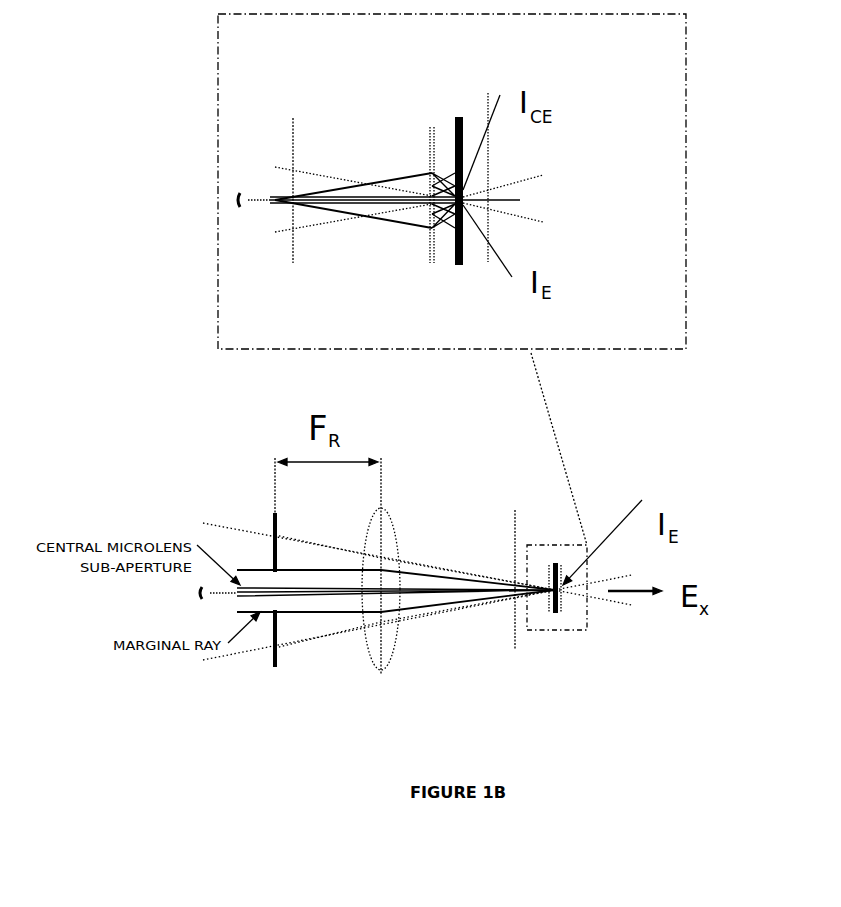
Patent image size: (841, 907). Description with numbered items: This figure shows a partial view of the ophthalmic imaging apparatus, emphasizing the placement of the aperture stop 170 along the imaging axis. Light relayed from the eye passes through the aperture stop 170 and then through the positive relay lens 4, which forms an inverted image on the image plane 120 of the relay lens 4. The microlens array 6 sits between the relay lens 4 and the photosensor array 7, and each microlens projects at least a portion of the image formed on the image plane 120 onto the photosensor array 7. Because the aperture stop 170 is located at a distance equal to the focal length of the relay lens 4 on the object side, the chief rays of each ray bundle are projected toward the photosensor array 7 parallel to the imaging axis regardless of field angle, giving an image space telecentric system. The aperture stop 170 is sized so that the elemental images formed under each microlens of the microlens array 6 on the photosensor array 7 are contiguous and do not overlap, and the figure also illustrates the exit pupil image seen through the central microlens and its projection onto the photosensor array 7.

The aperture stop 170 is at (266, 522).
The relay lens 4 is at (398, 523).
The image plane 120 is at (523, 526).
The microlens array 6 is at (545, 620).
The photosensor array 7 is at (562, 614).